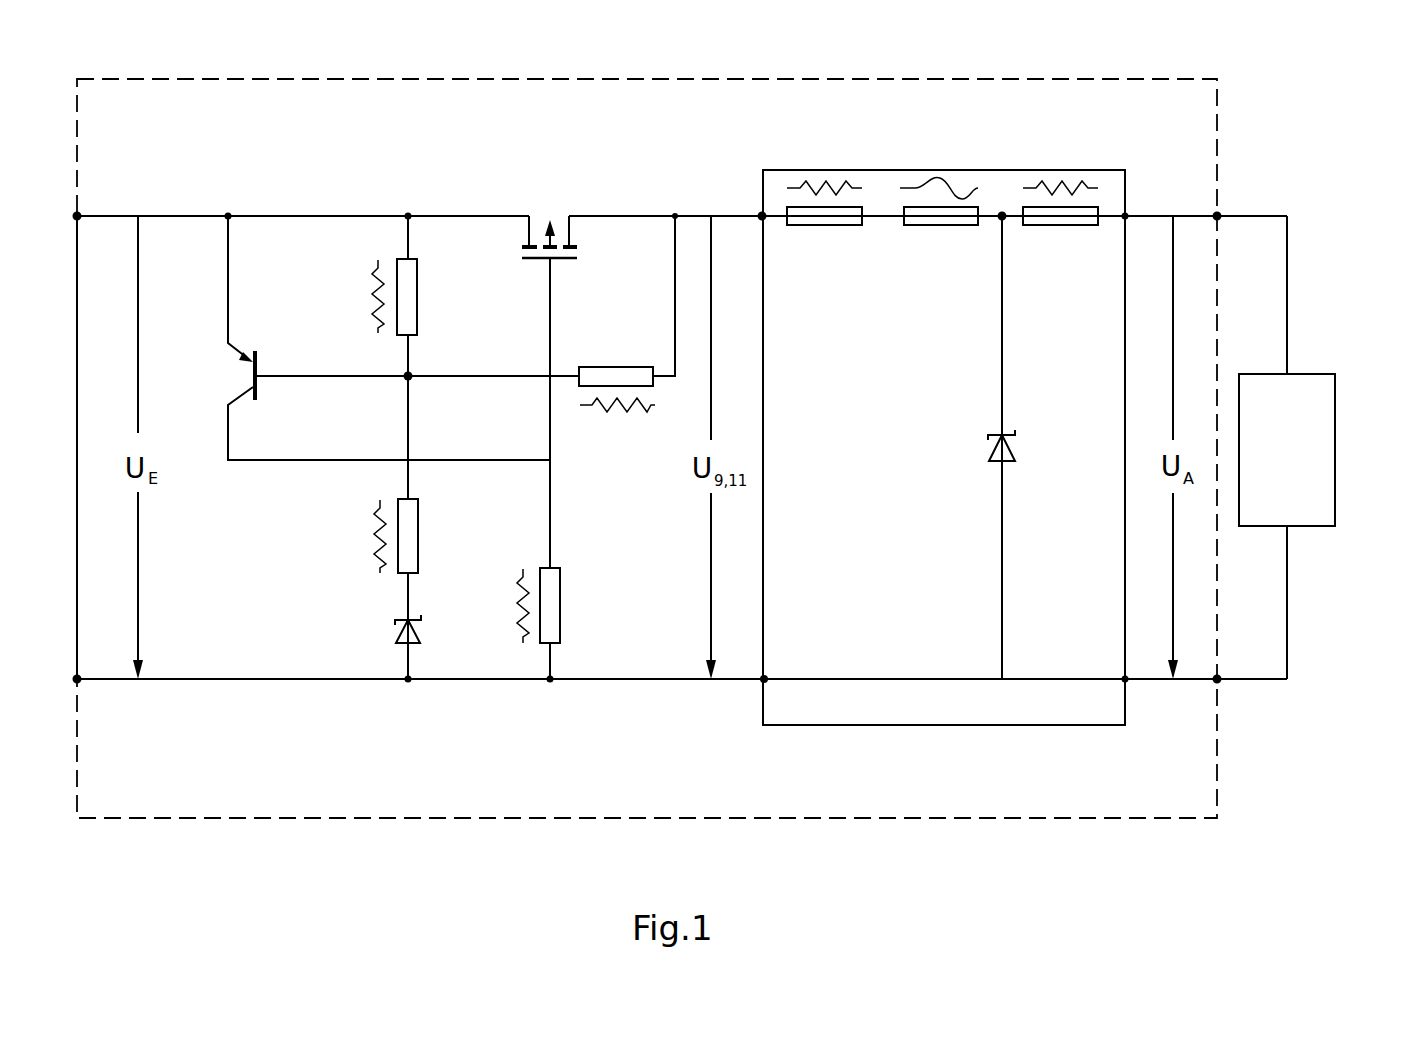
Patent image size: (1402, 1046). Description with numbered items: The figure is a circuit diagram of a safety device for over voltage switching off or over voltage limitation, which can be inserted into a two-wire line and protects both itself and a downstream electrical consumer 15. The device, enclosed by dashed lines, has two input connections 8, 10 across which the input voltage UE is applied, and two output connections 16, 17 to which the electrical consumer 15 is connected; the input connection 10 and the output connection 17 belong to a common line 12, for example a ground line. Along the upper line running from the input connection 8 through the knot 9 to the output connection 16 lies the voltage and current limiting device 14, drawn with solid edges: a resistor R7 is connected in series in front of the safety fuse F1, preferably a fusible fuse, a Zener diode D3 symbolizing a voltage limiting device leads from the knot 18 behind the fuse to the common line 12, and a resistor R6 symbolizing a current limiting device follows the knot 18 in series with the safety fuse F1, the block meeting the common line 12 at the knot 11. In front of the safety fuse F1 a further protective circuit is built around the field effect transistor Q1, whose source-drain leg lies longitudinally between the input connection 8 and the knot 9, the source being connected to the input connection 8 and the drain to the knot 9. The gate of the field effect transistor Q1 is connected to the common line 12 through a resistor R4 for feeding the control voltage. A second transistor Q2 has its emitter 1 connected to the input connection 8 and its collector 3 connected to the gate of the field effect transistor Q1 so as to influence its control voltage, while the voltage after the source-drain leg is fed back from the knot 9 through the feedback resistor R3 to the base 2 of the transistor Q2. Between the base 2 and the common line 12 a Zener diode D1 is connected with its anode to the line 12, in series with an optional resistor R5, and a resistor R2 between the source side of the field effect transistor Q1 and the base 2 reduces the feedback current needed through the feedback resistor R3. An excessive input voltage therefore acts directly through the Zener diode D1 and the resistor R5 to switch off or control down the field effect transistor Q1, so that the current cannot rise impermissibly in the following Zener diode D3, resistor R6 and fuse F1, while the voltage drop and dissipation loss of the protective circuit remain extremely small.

The emitter of transistor Q2 1 is at (228, 289).
The base of transistor Q2 2 is at (331, 374).
The collector of transistor Q2 3 is at (378, 423).
The input connection 8 is at (77, 216).
The knot 9 is at (762, 216).
The input connection 10 is at (77, 679).
The knot 11 is at (764, 679).
The common line 12 is at (338, 679).
The voltage and current limiting device 14 is at (922, 170).
The electrical consumer 15 is at (1335, 445).
The output connection 16 is at (1217, 216).
The output connection 17 is at (1217, 679).
The knot 18 is at (1002, 216).
The field effect transistor Q1 is at (548, 366).
The transistor Q2 is at (377, 338).
The resistor R2 is at (412, 296).
The feedback resistor R3 is at (541, 314).
The resistor R4 is at (556, 623).
The resistor R5 is at (414, 498).
The resistor R6 is at (1060, 218).
The resistor R7 is at (824, 218).
The safety fuse F1 is at (939, 217).
The Zener diode D1 is at (428, 647).
The Zener diode D3 is at (1020, 447).